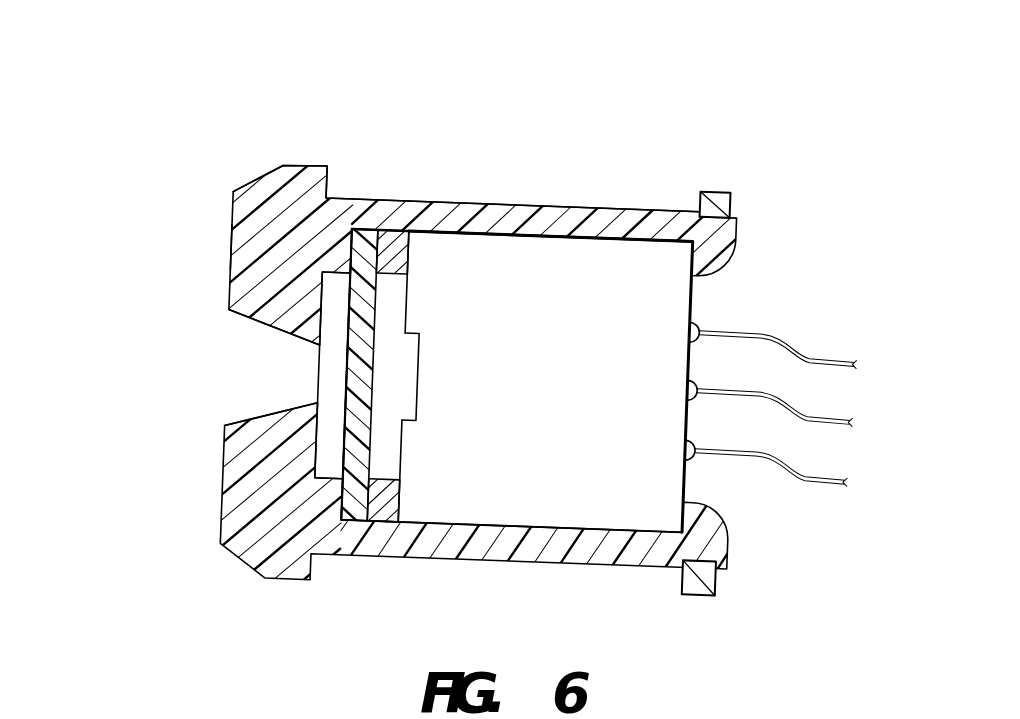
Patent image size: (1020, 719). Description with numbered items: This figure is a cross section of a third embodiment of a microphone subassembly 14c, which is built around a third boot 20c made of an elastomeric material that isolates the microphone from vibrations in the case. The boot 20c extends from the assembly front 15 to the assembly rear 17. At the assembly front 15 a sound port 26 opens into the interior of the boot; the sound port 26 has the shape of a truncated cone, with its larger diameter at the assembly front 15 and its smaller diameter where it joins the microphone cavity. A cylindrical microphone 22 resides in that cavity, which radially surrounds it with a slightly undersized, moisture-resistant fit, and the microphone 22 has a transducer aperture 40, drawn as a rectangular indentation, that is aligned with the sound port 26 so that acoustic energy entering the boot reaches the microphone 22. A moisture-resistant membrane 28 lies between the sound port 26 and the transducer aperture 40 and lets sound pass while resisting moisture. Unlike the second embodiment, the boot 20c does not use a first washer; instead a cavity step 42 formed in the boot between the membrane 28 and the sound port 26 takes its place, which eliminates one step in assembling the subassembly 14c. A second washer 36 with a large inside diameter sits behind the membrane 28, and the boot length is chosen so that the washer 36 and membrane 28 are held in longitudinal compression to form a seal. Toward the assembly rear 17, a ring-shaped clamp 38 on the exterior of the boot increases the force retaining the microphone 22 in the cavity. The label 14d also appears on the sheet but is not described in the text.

The microphone subassembly 14c is at (162, 165).
The sensor module 14d is at (70, 718).
The third boot 20c is at (290, 198).
The assembly front 15 is at (232, 248).
The sound port 26 is at (243, 377).
The membrane 28 is at (363, 228).
The microphone 22 is at (576, 272).
The clamp 38 is at (712, 202).
The transducer aperture 40 is at (403, 373).
The second washer 36 is at (383, 500).
The cavity step 42 is at (322, 500).
The assembly rear 17 is at (686, 486).